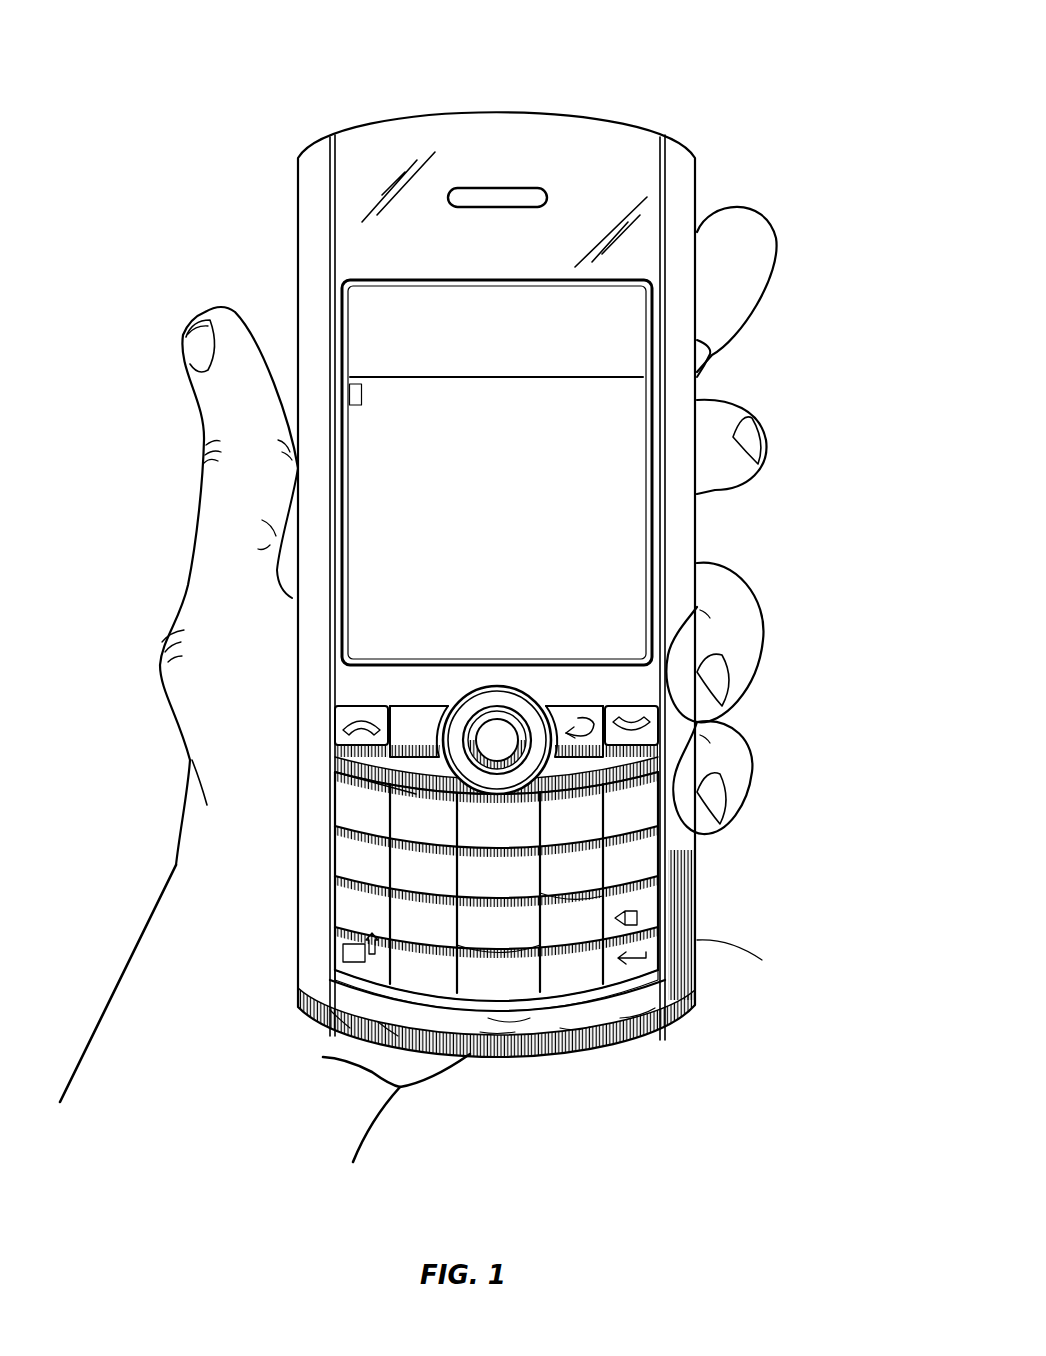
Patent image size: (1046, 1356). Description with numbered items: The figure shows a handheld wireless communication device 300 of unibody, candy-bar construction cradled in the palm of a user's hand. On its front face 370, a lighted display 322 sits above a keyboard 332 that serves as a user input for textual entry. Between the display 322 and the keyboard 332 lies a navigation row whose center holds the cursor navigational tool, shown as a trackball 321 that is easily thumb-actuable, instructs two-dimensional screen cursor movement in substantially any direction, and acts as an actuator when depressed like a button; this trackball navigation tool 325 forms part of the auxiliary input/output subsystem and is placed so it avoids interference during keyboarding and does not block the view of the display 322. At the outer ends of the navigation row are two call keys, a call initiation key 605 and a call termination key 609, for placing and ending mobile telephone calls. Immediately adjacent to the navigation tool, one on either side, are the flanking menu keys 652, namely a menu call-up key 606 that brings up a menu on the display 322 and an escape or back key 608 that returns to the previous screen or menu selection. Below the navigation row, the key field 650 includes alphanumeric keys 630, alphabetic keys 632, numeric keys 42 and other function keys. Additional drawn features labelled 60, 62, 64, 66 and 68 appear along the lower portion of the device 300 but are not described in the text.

The handheld wireless communication device 300 is at (645, 45).
The front face 370 is at (682, 195).
The display 322 is at (372, 318).
The call initiation key 605 is at (358, 725).
The menu call-up key 606 is at (410, 718).
The escape key 608 is at (582, 717).
The call termination key 609 is at (650, 727).
The menu keys 652 is at (567, 702).
The trackball navigation tool 325 is at (535, 763).
The alphabetic keys 632 is at (495, 737).
The trackball 321 is at (328, 845).
The alphanumeric keys 630 is at (585, 907).
The numeric keys 42 is at (510, 967).
The key field 650 is at (347, 975).
The bottom portion 60 is at (335, 1012).
The bottom portion 62 is at (385, 987).
The bottom portion 64 is at (495, 1005).
The keyboard 332 is at (510, 1022).
The bottom portion 66 is at (573, 985).
The bottom portion 68 is at (625, 985).